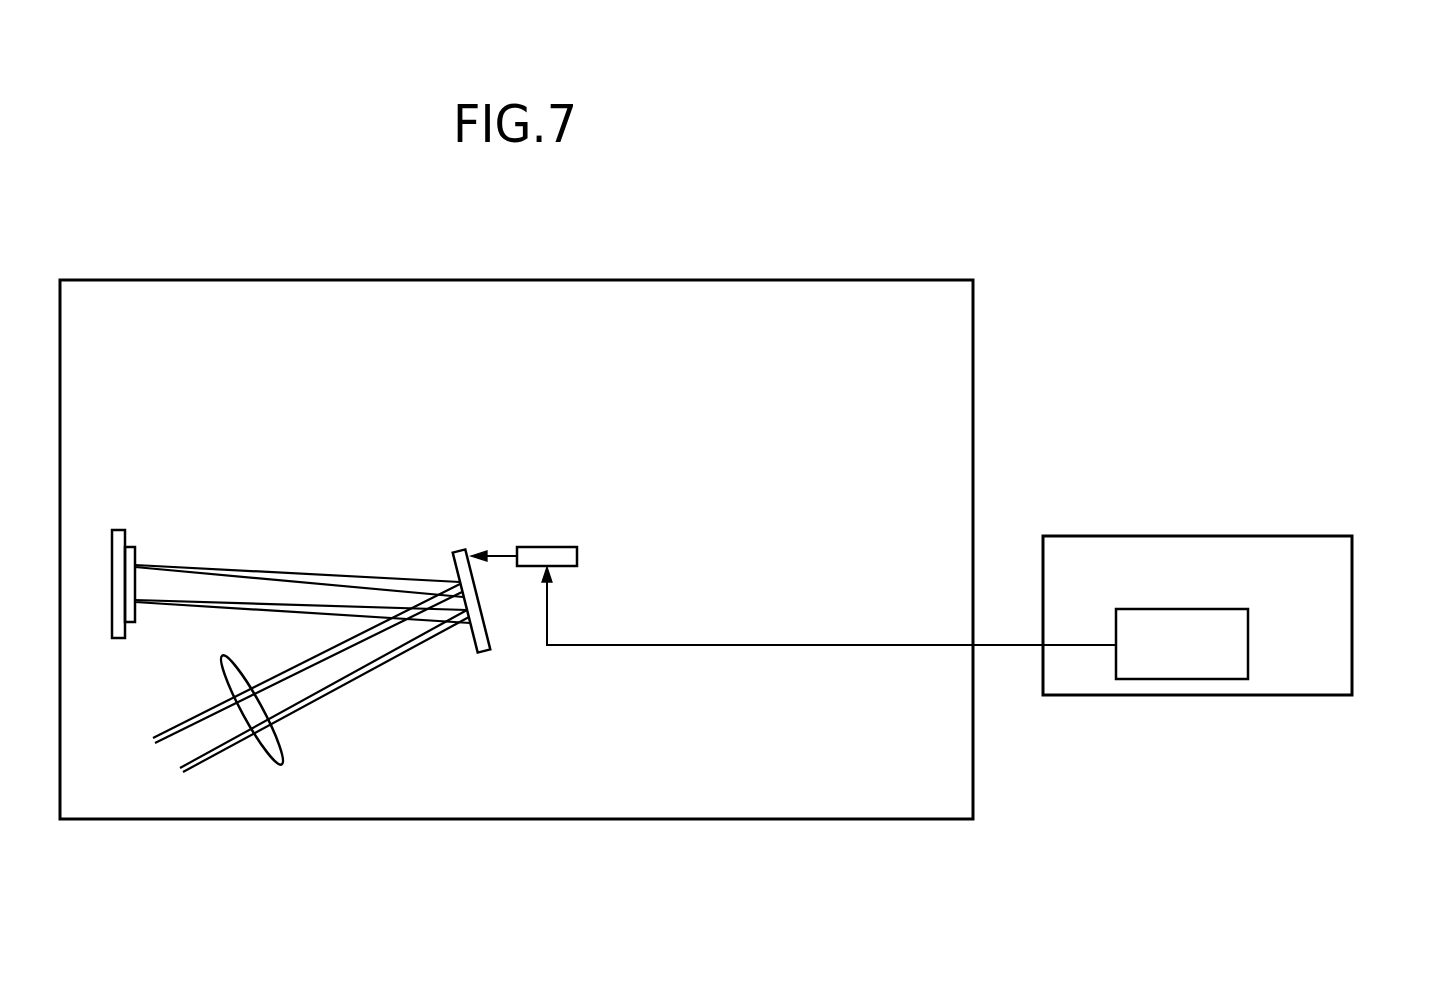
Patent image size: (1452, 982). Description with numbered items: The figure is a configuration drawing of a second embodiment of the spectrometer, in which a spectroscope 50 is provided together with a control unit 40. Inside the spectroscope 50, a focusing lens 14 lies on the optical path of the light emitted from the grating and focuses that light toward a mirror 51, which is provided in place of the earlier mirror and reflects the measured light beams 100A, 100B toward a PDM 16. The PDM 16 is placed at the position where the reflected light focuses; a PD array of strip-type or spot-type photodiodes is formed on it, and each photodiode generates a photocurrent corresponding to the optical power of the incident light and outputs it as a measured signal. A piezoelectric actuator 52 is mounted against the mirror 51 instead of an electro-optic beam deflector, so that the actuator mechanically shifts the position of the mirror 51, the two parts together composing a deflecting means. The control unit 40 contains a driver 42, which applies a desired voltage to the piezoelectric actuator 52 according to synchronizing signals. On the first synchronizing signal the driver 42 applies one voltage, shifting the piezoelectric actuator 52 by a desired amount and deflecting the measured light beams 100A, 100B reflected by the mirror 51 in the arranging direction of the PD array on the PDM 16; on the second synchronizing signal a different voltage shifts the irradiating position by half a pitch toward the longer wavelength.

The spectroscope 50 is at (519, 279).
The PDM 16 is at (113, 566).
The measured light beam 100A is at (380, 607).
The measured light beam 100B is at (410, 603).
The focusing lens 14 is at (283, 760).
The mirror 51 is at (483, 655).
The piezoelectric actuator 52 is at (577, 549).
The control unit 40 is at (1352, 612).
The driver 42 is at (1248, 644).